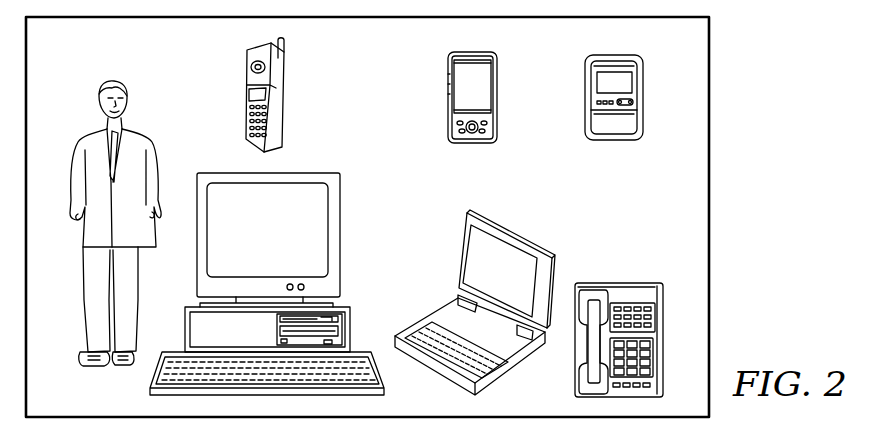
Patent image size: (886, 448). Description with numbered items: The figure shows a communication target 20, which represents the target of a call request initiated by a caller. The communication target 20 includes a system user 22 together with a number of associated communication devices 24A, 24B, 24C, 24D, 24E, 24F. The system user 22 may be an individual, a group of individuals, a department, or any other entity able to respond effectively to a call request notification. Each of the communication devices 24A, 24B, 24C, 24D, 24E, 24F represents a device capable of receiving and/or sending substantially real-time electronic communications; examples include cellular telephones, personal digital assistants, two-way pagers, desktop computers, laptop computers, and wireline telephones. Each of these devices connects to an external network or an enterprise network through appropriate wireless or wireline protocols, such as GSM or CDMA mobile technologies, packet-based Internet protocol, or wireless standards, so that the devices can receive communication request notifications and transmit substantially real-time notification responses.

The communication target 20 is at (716, 211).
The system user 22 is at (102, 83).
The communication device 24A is at (286, 101).
The communication device 24B is at (500, 83).
The communication device 24C is at (612, 141).
The communication device 24D is at (342, 234).
The communication device 24E is at (512, 233).
The communication device 24F is at (620, 283).